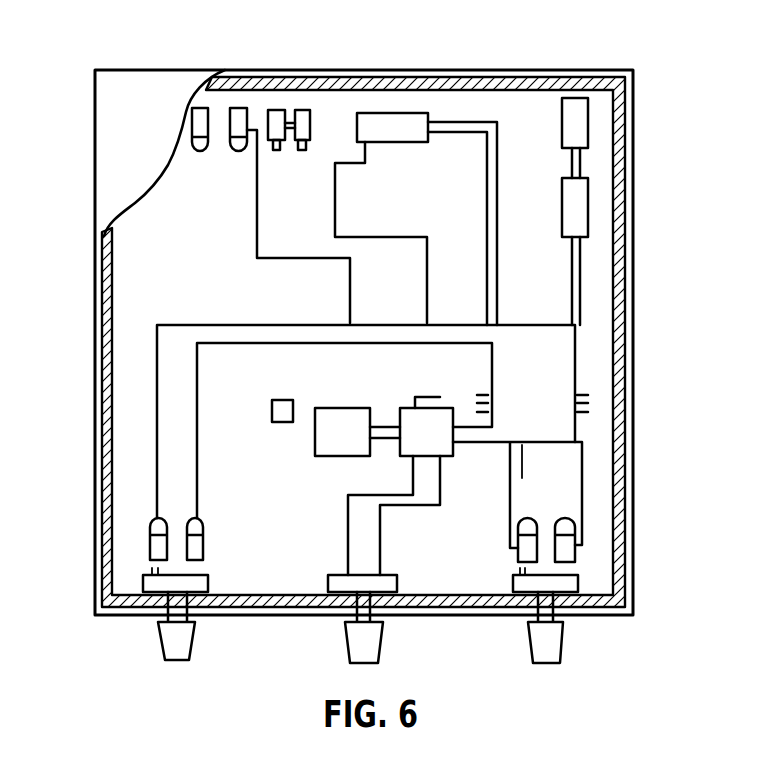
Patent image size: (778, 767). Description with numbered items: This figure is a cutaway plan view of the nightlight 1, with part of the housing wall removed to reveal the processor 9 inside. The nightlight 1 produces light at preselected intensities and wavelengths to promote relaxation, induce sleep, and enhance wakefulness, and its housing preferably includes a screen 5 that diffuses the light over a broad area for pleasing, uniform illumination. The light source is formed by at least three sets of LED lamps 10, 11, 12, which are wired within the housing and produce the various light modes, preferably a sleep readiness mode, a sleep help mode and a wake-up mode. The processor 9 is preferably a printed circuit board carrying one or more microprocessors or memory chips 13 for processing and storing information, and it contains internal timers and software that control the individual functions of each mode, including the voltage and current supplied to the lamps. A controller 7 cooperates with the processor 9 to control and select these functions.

The nightlight 1 is at (633, 315).
The screen 5 is at (291, 594).
The controller 7 is at (562, 640).
The processor 9 is at (190, 291).
The LED lamps 10 is at (220, 123).
The LED lamps 11 is at (175, 542).
The LED lamps 12 is at (547, 545).
The microprocessors or memory chips 13 is at (338, 408).